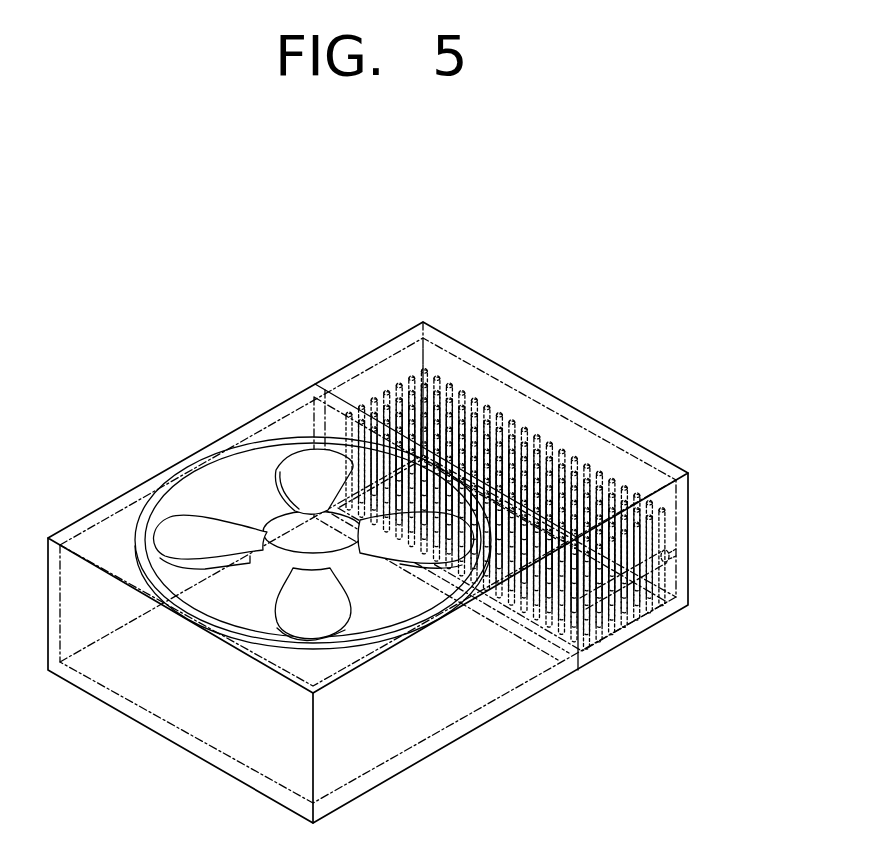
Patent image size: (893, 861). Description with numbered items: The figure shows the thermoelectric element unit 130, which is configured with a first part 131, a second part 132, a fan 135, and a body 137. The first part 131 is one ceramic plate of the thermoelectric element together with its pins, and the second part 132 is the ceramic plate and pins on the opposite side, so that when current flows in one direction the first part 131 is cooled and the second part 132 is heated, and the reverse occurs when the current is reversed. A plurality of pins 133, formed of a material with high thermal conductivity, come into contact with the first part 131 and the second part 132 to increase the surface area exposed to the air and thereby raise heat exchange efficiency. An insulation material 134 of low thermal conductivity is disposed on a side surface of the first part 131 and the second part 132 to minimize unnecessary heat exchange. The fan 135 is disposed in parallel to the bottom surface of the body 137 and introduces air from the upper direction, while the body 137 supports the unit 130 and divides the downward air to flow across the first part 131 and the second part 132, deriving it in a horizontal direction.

The thermoelectric element unit 130 is at (391, 226).
The first part 131 is at (654, 556).
The second part 132 is at (653, 608).
The pins 133 is at (629, 645).
The insulation material 134 is at (661, 550).
The fan 135 is at (290, 468).
The body 137 is at (438, 744).